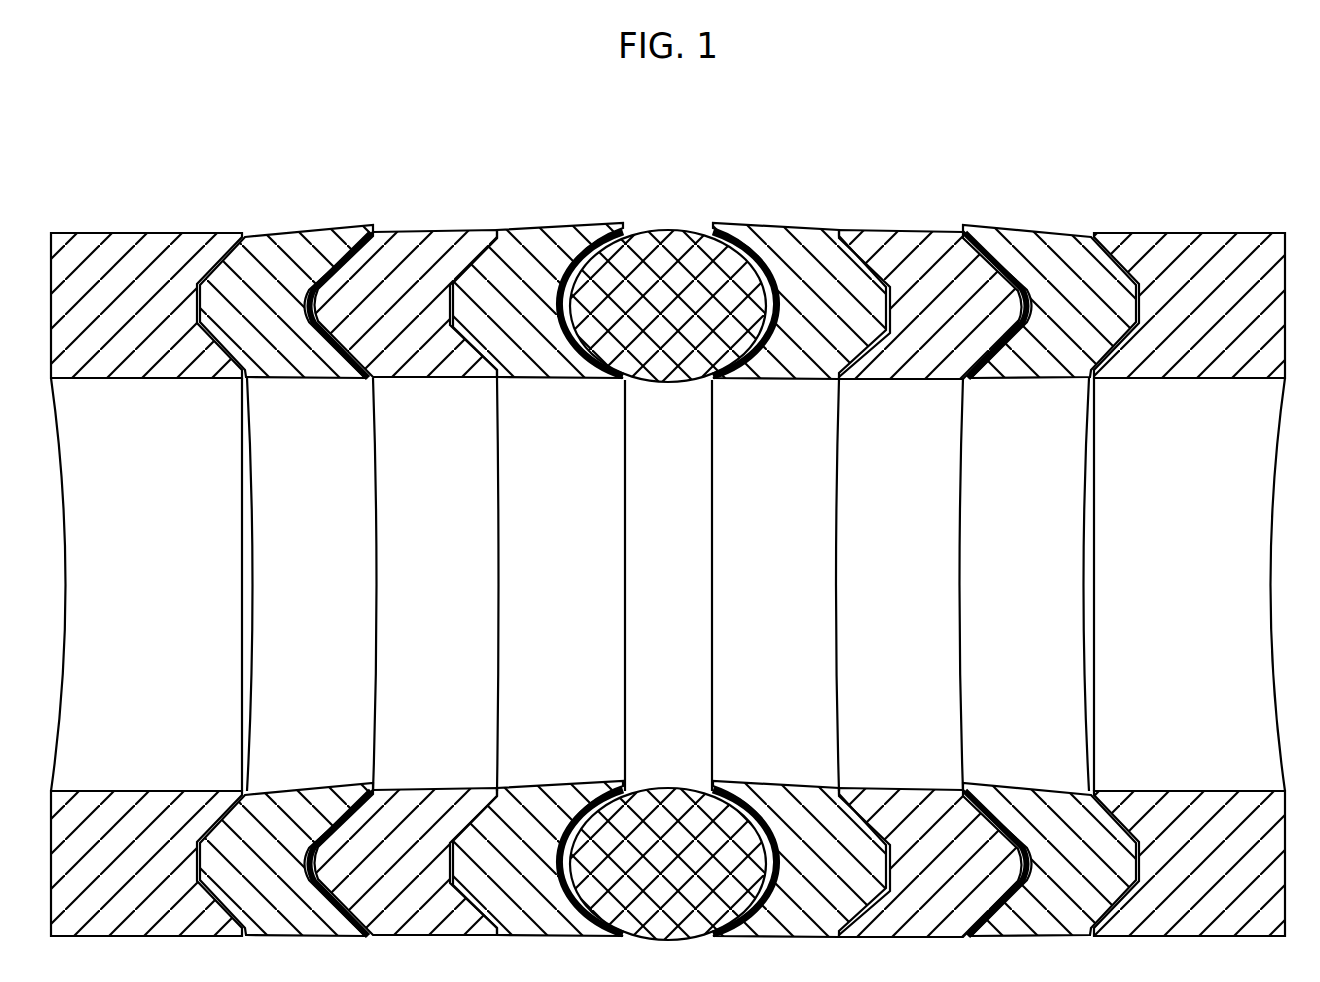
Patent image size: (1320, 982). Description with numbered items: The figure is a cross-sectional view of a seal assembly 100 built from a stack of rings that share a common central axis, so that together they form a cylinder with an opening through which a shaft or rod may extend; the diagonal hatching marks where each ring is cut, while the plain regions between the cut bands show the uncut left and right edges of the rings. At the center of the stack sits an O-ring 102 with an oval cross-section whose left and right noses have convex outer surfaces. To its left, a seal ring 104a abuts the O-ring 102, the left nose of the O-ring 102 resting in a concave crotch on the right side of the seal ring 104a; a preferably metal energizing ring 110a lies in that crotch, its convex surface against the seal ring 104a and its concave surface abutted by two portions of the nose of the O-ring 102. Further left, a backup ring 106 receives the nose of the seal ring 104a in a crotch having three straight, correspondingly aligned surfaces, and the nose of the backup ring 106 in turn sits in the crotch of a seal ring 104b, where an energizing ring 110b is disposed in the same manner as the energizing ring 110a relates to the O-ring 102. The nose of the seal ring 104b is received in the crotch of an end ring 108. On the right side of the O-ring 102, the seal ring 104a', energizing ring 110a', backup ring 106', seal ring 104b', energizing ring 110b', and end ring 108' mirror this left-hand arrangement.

The seal assembly 100 is at (257, 176).
The O-ring 102 is at (685, 625).
The seal ring 104a is at (539, 579).
The seal ring 104a' is at (799, 580).
The seal ring 104b is at (288, 580).
The seal ring 104b' is at (1049, 580).
The backup ring 106 is at (407, 582).
The backup ring 106' is at (930, 583).
The end ring 108 is at (146, 584).
The end ring 108' is at (1189, 584).
The energizing ring 110a is at (579, 583).
The energizing ring 110a' is at (765, 583).
The energizing ring 110b is at (320, 584).
The energizing ring 110b' is at (1022, 584).